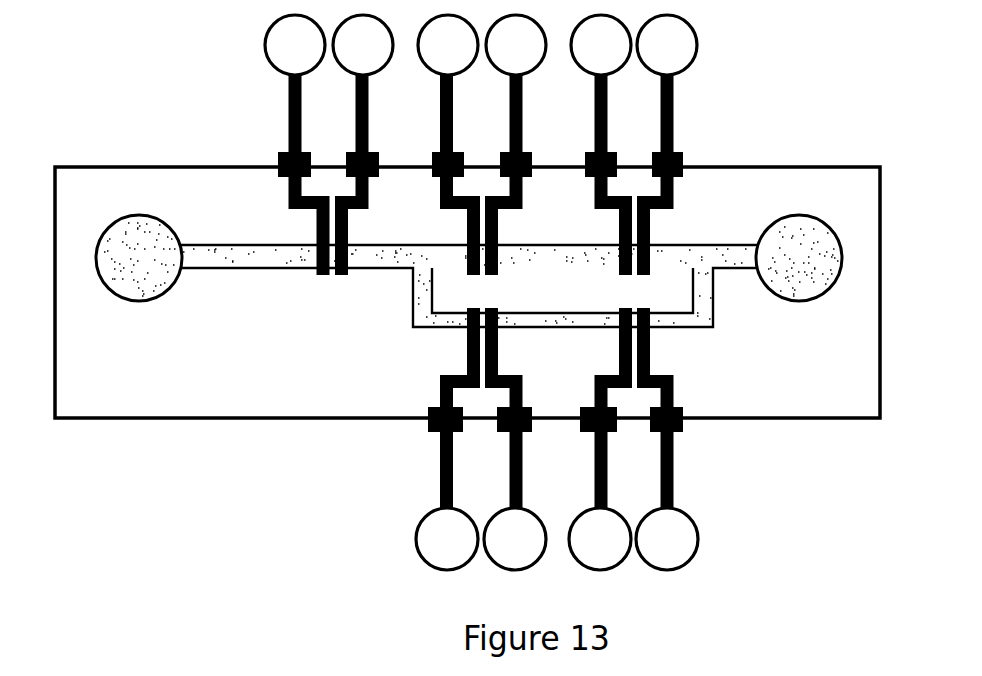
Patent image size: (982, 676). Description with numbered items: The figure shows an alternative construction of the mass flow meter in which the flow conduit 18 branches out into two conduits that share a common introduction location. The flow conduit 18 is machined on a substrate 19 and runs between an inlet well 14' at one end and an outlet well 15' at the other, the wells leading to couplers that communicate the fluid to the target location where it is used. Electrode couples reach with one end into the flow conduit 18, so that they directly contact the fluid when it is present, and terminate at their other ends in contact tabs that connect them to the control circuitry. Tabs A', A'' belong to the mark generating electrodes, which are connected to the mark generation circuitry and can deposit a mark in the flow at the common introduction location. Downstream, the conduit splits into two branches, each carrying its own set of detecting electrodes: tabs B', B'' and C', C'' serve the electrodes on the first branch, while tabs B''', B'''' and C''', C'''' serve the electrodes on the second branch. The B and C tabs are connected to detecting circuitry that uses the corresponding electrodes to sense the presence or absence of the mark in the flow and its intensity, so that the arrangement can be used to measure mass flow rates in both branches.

The inlet well 14' is at (101, 194).
The outlet well 15' is at (839, 184).
The flow conduit 18 is at (723, 253).
The substrate 19 is at (97, 387).
The mark generation tab A' is at (295, 145).
The mark generation tab A'' is at (363, 145).
The detecting tab B' is at (448, 145).
The detecting tab B'' is at (516, 145).
The detecting tab C' is at (601, 145).
The detecting tab C'' is at (667, 145).
The detecting tab B''' is at (447, 439).
The detecting tab B'''' is at (515, 439).
The detecting tab C''' is at (600, 439).
The detecting tab C'''' is at (667, 439).